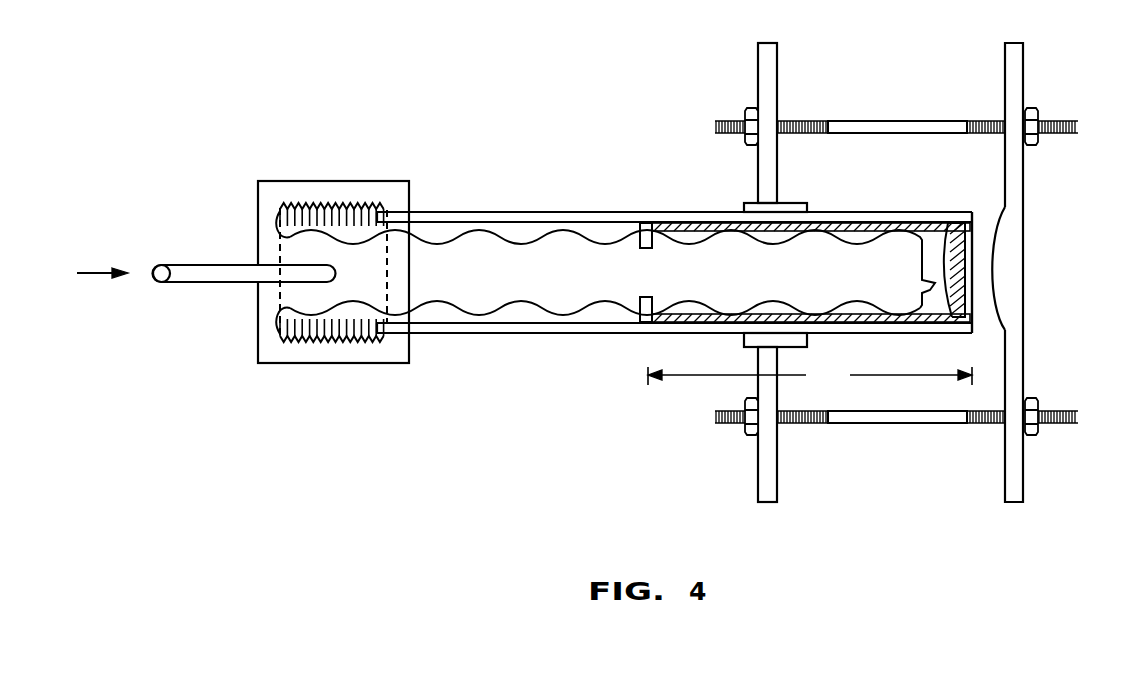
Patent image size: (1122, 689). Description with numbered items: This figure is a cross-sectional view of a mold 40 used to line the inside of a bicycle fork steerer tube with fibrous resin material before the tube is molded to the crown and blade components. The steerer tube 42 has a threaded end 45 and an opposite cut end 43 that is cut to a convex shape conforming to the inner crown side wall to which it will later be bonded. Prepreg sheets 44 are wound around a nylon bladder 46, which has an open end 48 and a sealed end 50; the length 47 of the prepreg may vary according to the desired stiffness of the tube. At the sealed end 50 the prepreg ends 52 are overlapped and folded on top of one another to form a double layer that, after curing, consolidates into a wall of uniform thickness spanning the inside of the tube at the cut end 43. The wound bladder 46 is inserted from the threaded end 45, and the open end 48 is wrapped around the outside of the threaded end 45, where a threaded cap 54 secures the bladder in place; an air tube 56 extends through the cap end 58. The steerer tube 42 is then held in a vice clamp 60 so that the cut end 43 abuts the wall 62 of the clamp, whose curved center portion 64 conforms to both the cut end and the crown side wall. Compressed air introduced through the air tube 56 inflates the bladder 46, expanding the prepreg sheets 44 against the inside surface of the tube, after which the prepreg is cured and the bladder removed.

The mold 40 is at (441, 176).
The steerer tube 42 is at (505, 212).
The cut end 43 is at (972, 212).
The prepreg sheets 44 is at (683, 223).
The threaded end 45 is at (350, 208).
The nylon bladder 46 is at (590, 228).
The length of the prepreg sheets 47 is at (810, 381).
The open end 48 is at (280, 207).
The sealed end 50 is at (957, 287).
The ends of prepreg 52 is at (968, 252).
The threaded cap 54 is at (303, 345).
The air tube 56 is at (208, 265).
The cap end 58 is at (258, 313).
The vice clamp 60 is at (1007, 43).
The wall 62 is at (1025, 72).
The center portion 64 is at (995, 258).